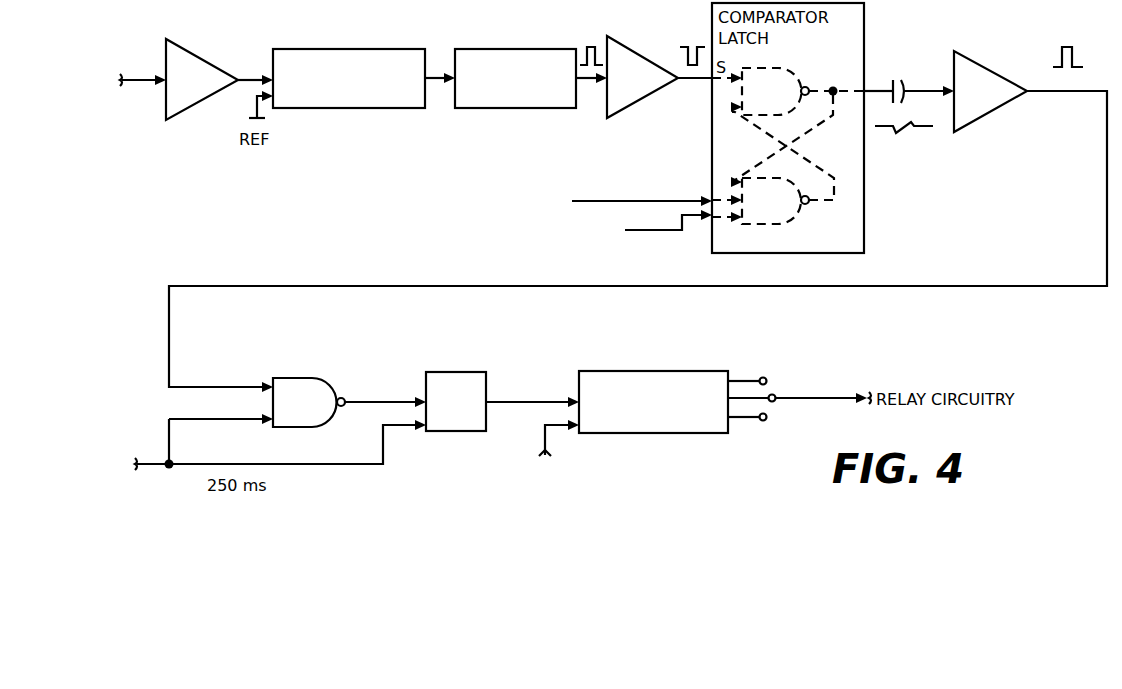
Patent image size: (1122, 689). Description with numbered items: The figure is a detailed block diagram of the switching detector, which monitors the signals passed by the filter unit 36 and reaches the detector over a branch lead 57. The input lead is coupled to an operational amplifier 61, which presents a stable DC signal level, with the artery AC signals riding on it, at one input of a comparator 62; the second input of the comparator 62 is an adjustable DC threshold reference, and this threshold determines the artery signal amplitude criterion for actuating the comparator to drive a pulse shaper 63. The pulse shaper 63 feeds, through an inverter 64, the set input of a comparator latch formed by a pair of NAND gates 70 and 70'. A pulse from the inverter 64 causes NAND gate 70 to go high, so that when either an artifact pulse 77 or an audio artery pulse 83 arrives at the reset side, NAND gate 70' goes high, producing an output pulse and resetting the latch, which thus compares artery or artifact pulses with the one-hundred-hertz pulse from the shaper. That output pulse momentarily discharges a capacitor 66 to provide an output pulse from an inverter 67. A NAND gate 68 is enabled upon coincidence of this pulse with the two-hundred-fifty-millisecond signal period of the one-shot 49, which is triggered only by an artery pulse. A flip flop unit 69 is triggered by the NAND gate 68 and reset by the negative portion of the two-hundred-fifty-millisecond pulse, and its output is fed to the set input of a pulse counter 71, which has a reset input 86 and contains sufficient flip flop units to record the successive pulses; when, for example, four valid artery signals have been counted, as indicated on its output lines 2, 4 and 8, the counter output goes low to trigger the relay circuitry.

The filter unit 36 is at (127, 81).
The branch lead 57 is at (140, 81).
The operational amplifier 61 is at (216, 62).
The comparator 62 is at (392, 48).
The pulse shaper 63 is at (500, 49).
The inverter 64 is at (660, 61).
The capacitor 66 is at (901, 80).
The inverter 67 is at (1014, 85).
The NAND gate 70 is at (775, 91).
The NAND gate 70' is at (775, 201).
The artifact signal input 77 is at (590, 201).
The audio pulses input 83 is at (590, 225).
The O.S. 49 is at (261, 447).
The NAND gate 68 is at (333, 359).
The flip flop unit 69 is at (486, 373).
The pulse counter 71 is at (676, 371).
The reset input 86 is at (556, 451).
The counter output 2 is at (748, 367).
The counter output 4 is at (799, 389).
The counter output 8 is at (748, 431).